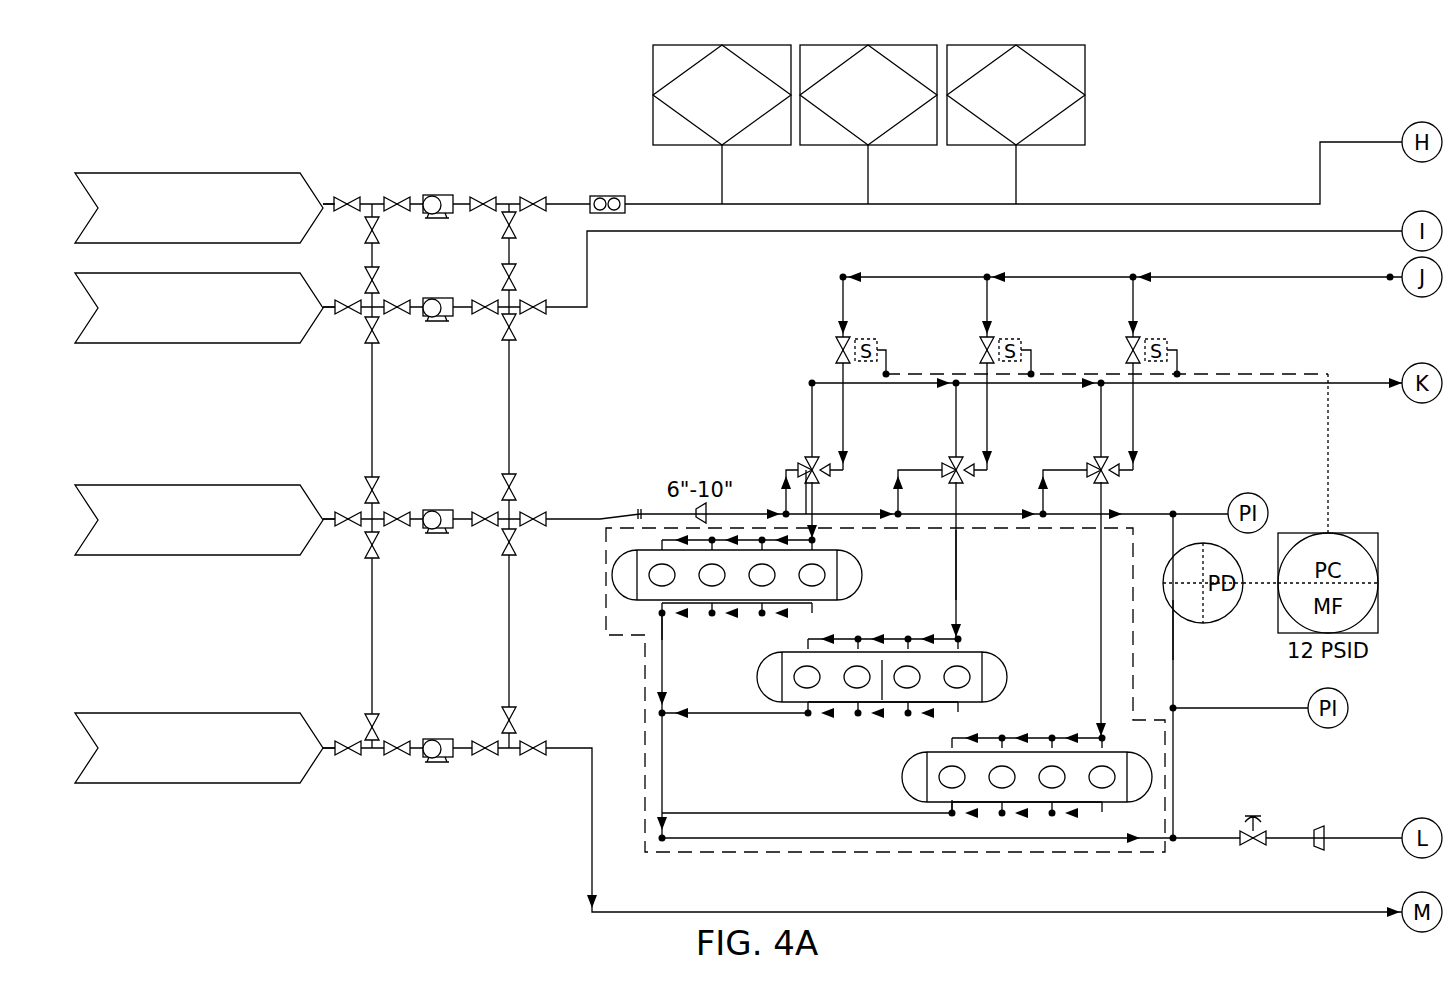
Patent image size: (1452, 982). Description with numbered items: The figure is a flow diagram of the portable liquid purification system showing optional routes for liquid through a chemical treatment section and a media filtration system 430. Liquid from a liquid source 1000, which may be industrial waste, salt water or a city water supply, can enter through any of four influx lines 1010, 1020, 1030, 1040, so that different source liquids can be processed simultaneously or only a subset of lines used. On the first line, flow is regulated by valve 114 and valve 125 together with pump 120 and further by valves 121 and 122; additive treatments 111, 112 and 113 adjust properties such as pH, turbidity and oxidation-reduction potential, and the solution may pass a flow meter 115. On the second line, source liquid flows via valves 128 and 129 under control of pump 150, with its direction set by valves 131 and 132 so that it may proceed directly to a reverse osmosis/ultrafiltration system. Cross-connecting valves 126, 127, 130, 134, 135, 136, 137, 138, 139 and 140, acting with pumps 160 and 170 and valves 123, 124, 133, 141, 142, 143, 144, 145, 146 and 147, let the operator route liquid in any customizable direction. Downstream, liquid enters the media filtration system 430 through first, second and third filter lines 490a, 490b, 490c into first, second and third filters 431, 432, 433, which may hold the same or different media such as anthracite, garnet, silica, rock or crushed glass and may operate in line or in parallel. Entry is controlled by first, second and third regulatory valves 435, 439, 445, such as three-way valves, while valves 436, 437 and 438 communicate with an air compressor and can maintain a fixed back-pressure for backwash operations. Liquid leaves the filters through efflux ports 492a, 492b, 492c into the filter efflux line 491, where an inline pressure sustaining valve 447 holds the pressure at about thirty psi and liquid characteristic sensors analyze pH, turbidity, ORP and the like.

The liquid source 1000 is at (150, 173).
The line 1010 is at (333, 200).
The influx line 1020 is at (333, 312).
The influx line 1030 is at (333, 515).
The influx line 1040 is at (333, 744).
The treatment 111 is at (653, 95).
The treatment 112 is at (855, 148).
The treatment 113 is at (1085, 95).
The valve 114 is at (347, 196).
The flow meter 115 is at (625, 204).
The pump 120 is at (432, 195).
The valve 121 is at (483, 195).
The valve 122 is at (533, 196).
The valve 123 is at (520, 225).
The valve 124 is at (505, 268).
The valve 125 is at (395, 196).
The valve 126 is at (363, 238).
The valve 127 is at (380, 270).
The valve 128 is at (350, 315).
The valve 129 is at (395, 315).
The valve 130 is at (370, 345).
The valve 131 is at (485, 315).
The valve 132 is at (540, 300).
The valve 133 is at (518, 330).
The valve 134 is at (377, 478).
The valve 135 is at (348, 530).
The valve 136 is at (397, 530).
The valve 137 is at (372, 560).
The valve 138 is at (348, 760).
The valve 139 is at (368, 714).
The valve 140 is at (397, 760).
The valve 141 is at (513, 475).
The valve 142 is at (540, 510).
The valve 143 is at (512, 558).
The valve 144 is at (483, 510).
The valve 145 is at (485, 760).
The valve 146 is at (507, 707).
The valve 147 is at (533, 760).
The pump 150 is at (437, 322).
The pump 160 is at (437, 534).
The pump 170 is at (437, 764).
The media filtration system 430 is at (645, 688).
The first filter 431 is at (862, 575).
The second filter 432 is at (1007, 670).
The third filter 433 is at (905, 772).
The first regulatory valve 435 is at (818, 478).
The valve 436 is at (840, 336).
The valve 437 is at (985, 336).
The valve 438 is at (1130, 336).
The second regulatory valve 439 is at (962, 478).
The third regulatory valve 445 is at (1107, 478).
The inline pressure sustaining valve 447 is at (1243, 830).
The first filter line 490a is at (806, 498).
The second filter line 490b is at (958, 555).
The third filter line 490c is at (1173, 625).
The filter efflux line 491 is at (843, 838).
The efflux port 492a is at (700, 617).
The efflux port 492b is at (885, 686).
The efflux port 492c is at (952, 816).